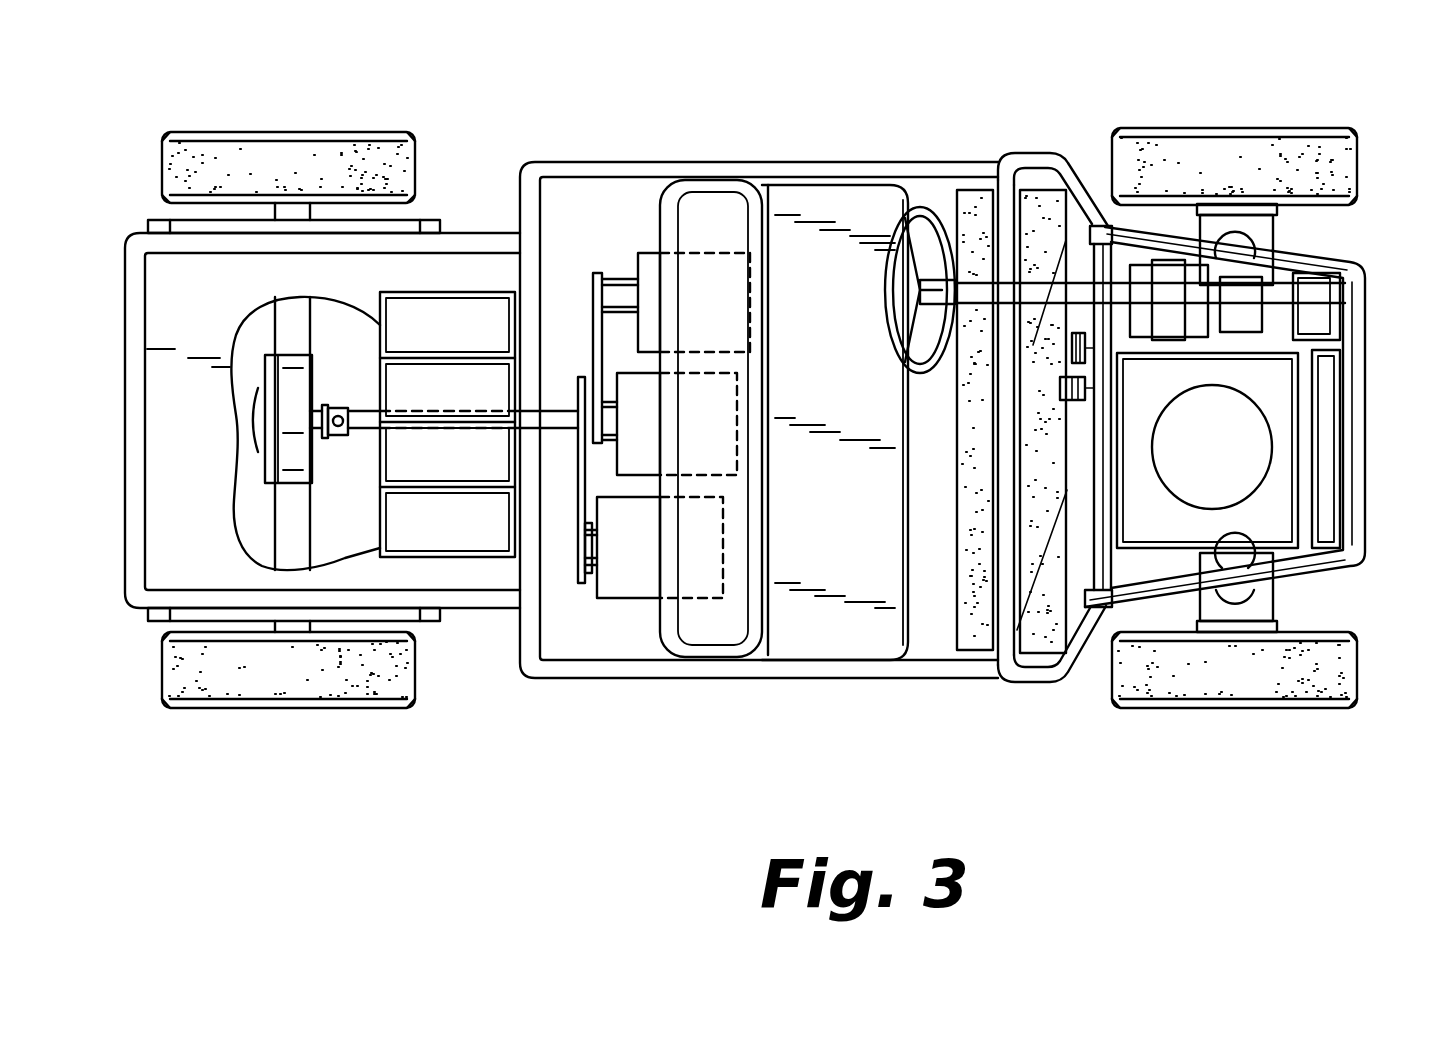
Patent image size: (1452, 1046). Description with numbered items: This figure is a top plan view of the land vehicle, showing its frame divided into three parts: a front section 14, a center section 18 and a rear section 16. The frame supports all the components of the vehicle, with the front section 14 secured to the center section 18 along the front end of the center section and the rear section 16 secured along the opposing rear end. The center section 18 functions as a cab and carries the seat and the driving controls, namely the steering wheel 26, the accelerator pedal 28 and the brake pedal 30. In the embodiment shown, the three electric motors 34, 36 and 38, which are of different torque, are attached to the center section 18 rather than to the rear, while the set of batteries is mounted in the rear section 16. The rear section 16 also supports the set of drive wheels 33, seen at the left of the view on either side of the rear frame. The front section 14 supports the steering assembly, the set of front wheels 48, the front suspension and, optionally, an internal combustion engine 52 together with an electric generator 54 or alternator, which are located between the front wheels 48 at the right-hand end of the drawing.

The front section 14 is at (1357, 729).
The rear section 16 is at (452, 718).
The center section 18 is at (929, 704).
The steering wheel 26 is at (899, 228).
The accelerator pedal 28 is at (1058, 387).
The brake pedal 30 is at (1069, 350).
The drive wheels 33 is at (270, 150).
The electric motor 34 is at (717, 413).
The electric motor 36 is at (707, 554).
The electric motor 38 is at (735, 278).
The wheels 48 is at (1314, 156).
The internal combustion engine 52 is at (1323, 476).
The electric generator 54 is at (1168, 268).